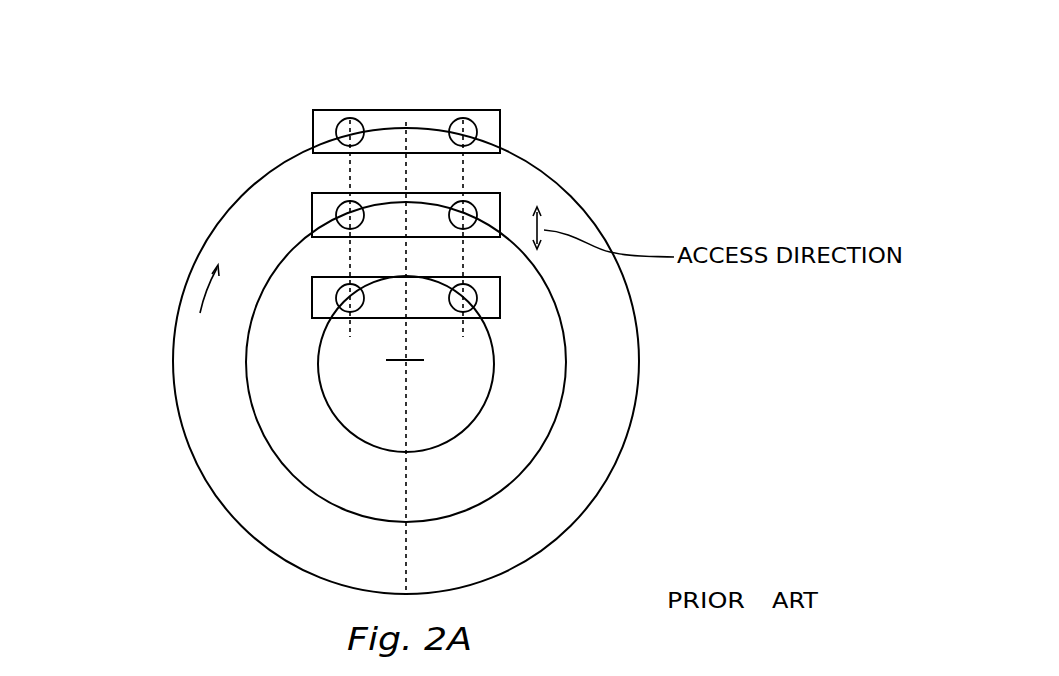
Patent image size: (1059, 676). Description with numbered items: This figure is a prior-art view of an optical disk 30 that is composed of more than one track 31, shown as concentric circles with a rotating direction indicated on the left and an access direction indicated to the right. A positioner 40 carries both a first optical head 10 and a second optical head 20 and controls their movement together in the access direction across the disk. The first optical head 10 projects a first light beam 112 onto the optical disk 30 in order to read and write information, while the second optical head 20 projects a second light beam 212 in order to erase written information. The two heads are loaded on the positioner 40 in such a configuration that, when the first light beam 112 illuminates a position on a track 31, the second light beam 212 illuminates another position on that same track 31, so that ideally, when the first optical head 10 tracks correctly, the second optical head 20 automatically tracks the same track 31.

The first optical head 10 is at (466, 118).
The first light beam 112 is at (648, 175).
The second optical head 20 is at (348, 118).
The second light beam 212 is at (330, 175).
The optical disk 30 is at (600, 220).
The track 31 is at (556, 307).
The positioner 40 is at (500, 120).